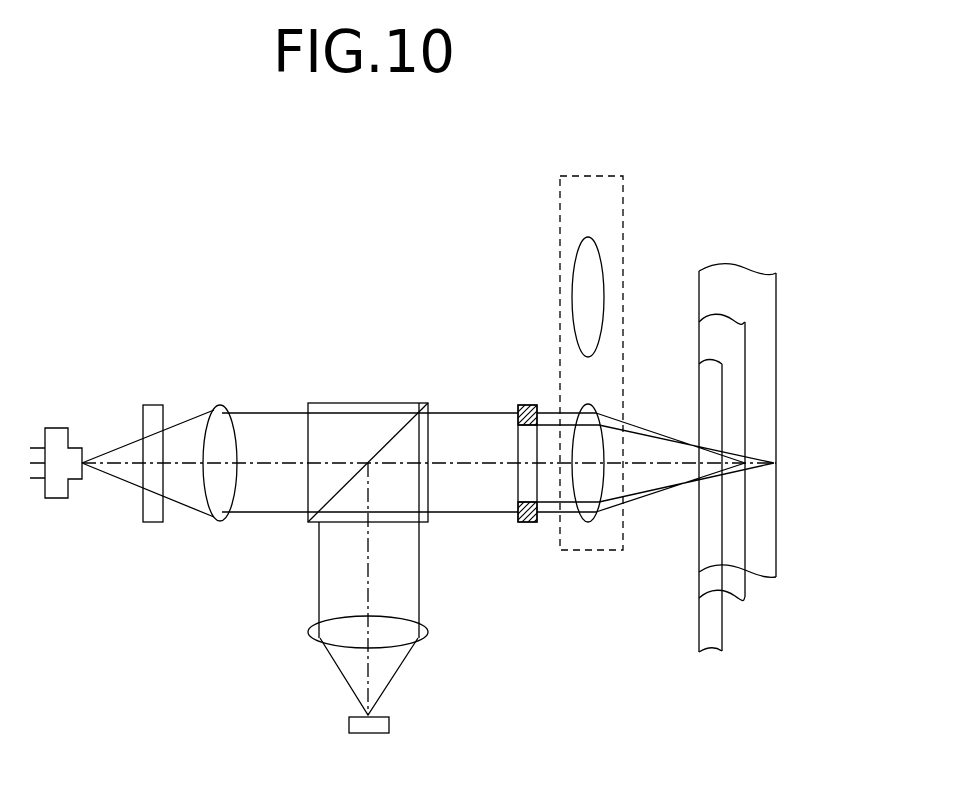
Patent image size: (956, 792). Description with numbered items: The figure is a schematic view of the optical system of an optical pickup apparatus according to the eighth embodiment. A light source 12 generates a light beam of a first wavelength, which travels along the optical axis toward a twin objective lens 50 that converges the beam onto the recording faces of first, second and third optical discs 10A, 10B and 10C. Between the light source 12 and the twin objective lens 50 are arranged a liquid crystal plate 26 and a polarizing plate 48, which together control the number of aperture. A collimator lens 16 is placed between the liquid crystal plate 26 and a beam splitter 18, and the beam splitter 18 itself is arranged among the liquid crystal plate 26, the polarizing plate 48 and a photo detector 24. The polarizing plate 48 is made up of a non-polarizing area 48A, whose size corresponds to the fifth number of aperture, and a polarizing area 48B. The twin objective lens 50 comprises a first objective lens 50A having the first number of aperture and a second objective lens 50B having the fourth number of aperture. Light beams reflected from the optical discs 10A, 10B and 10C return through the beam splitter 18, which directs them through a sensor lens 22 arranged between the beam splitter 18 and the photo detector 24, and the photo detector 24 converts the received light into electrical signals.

The light source 12 is at (62, 427).
The liquid crystal plate 26 is at (160, 405).
The collimator lens 16 is at (222, 407).
The beam splitter 18 is at (428, 403).
The polarizing plate 48 is at (520, 405).
The non-polarizing area 48A is at (523, 480).
The polarizing area 48B is at (530, 522).
The twin objective lens 50 is at (623, 237).
The first objective lens 50A is at (588, 237).
The second objective lens 50B is at (588, 404).
The first optical disc 10A is at (712, 620).
The second optical disc 10B is at (737, 430).
The third optical disc 10C is at (763, 365).
The sensor lens 22 is at (426, 632).
The photo detector 24 is at (383, 728).